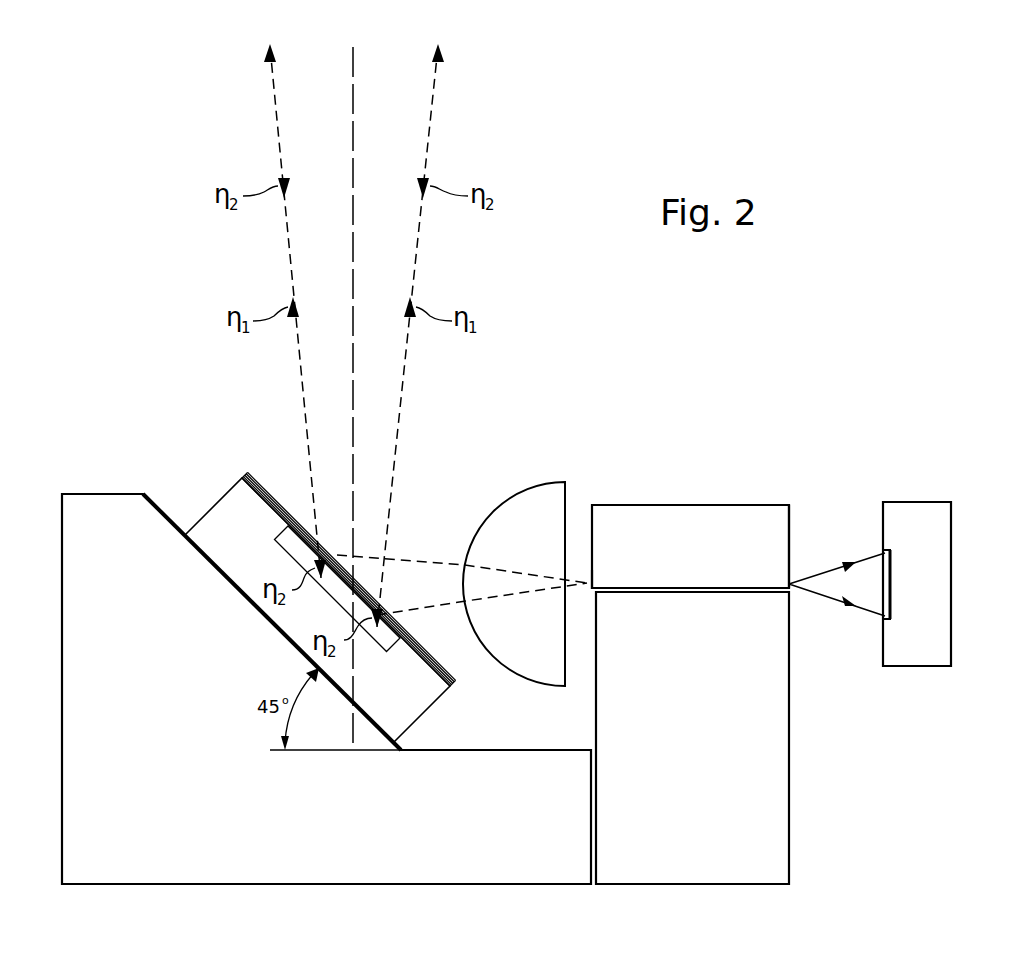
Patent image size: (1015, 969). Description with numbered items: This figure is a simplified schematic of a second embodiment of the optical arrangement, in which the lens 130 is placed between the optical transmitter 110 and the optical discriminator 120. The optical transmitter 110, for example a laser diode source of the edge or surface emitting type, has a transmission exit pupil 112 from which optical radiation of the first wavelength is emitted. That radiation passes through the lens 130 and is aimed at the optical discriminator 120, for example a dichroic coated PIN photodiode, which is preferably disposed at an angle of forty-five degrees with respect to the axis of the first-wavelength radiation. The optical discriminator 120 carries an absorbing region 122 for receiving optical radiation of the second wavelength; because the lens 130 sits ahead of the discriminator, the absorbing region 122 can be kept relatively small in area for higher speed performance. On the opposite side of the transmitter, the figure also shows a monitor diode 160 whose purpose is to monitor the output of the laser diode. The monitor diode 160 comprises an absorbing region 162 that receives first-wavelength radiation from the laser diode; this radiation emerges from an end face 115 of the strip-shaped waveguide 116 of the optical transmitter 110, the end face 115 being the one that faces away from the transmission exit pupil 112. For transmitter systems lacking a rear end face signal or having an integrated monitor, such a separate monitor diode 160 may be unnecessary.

The optical transmitter 110 is at (673, 513).
The transmission exit pupil 112 is at (589, 572).
The end face 115 is at (790, 527).
The strip-shaped waveguide 116 is at (692, 594).
The optical discriminator 120 is at (226, 513).
The absorbing region 122 is at (294, 545).
The lens 130 is at (472, 521).
The monitor diode 160 is at (941, 530).
The absorbing region 162 is at (888, 588).